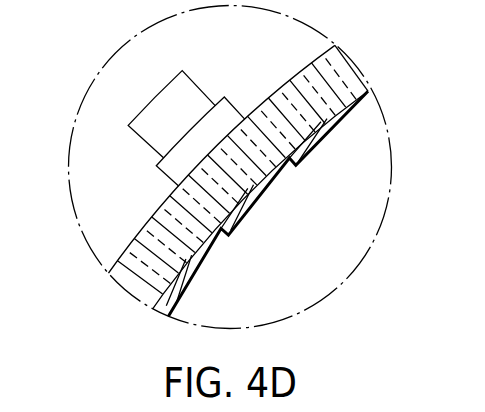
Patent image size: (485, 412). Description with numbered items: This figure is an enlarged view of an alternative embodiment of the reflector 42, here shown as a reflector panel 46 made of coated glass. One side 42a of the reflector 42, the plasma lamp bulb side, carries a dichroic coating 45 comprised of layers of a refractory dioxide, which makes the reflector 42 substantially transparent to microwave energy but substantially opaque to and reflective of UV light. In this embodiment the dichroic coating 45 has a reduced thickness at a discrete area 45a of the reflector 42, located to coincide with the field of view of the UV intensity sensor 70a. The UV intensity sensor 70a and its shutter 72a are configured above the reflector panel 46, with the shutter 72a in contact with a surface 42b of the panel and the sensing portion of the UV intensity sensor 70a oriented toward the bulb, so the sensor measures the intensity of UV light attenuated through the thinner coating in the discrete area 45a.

The reflector 42 is at (291, 58).
The one side of the reflector 42a is at (199, 277).
The surface of the reflector panel 42b is at (167, 197).
The dichroic coating 45 is at (326, 130).
The discrete area 45a is at (254, 200).
The reflector panel 46 is at (140, 250).
The UV intensity sensor 70a is at (205, 88).
The shutter 72a is at (233, 106).